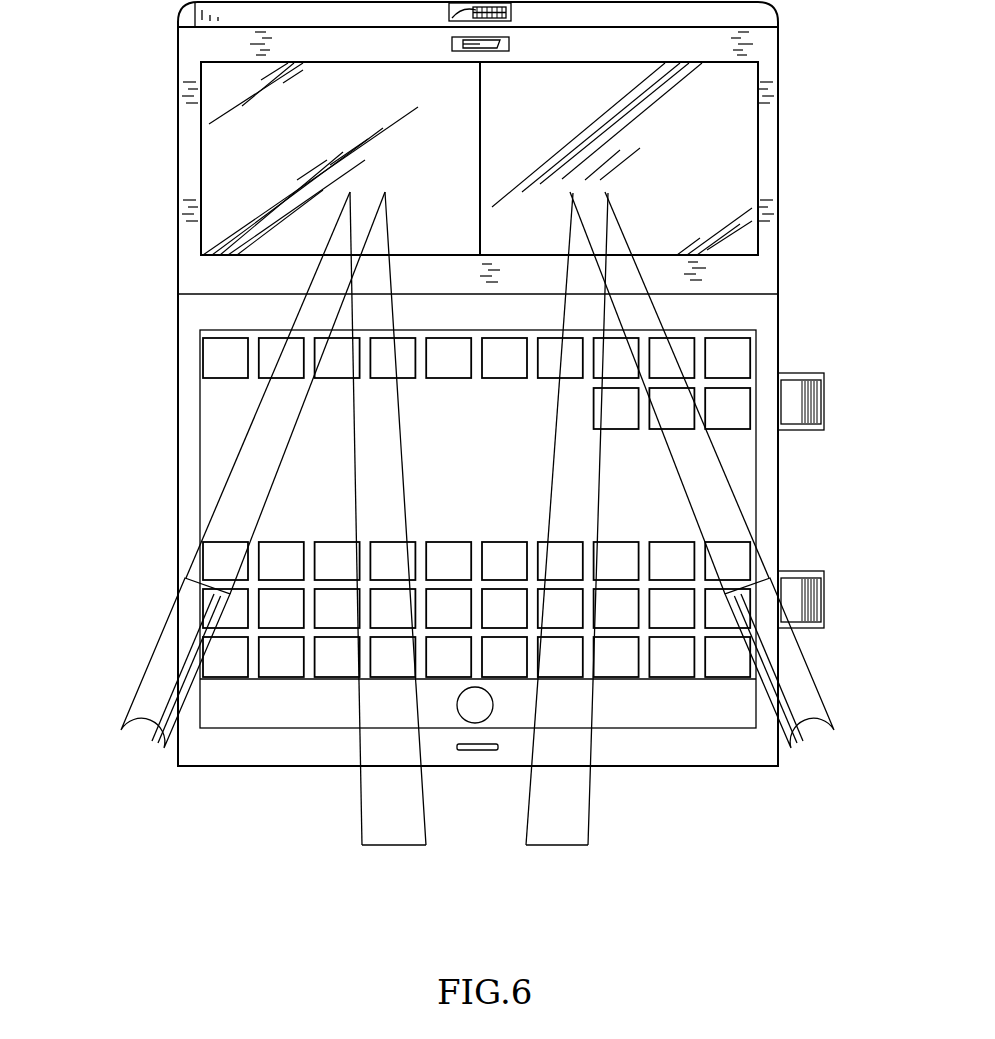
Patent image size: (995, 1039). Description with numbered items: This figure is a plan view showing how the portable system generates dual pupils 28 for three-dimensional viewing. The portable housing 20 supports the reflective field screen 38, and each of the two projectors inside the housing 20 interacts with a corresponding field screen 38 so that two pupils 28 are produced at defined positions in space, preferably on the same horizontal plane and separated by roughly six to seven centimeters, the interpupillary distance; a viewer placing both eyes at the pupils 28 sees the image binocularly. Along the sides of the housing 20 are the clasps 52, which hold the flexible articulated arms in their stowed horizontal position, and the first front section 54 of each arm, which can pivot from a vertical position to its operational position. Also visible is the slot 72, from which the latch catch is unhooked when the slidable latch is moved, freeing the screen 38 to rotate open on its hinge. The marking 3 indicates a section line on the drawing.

The portable housing 20 is at (177, 370).
The reflective field screen 38 is at (738, 118).
The clasps 52 is at (824, 396).
The pupil 28 is at (558, 847).
The first front section 54 is at (153, 664).
The slot 72 is at (468, 752).
The section line 3- 3 is at (205, 586).